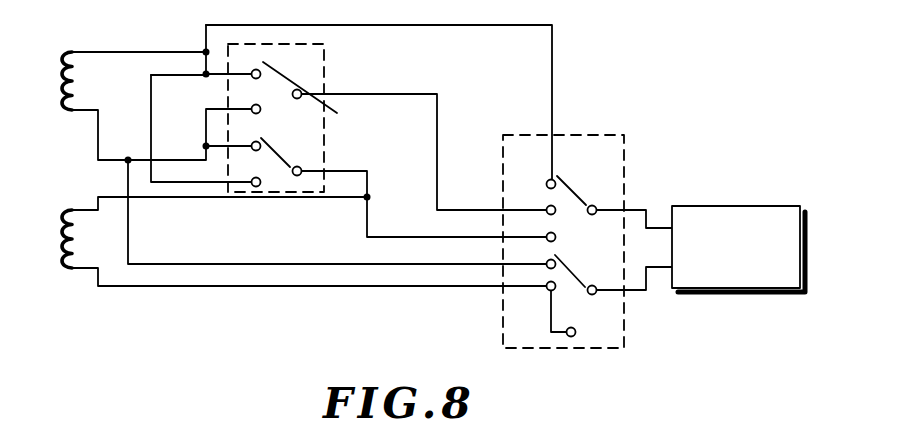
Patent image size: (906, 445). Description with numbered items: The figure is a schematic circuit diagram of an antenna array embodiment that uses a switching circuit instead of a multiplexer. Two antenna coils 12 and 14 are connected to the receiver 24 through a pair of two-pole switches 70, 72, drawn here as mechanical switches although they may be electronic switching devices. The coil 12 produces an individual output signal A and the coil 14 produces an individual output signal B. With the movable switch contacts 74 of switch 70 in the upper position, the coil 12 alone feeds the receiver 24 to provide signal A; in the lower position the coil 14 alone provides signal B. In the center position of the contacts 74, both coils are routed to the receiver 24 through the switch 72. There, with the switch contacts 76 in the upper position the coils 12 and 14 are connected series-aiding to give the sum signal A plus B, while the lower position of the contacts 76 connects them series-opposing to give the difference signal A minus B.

The antenna coil 12 is at (53, 50).
The antenna coil 14 is at (52, 212).
The two-pole switch 72 is at (325, 52).
The switch contacts 76 is at (278, 78).
The two-pole switch 70 is at (565, 133).
The movable switch contacts 74 is at (574, 190).
The receiver 24 is at (725, 206).